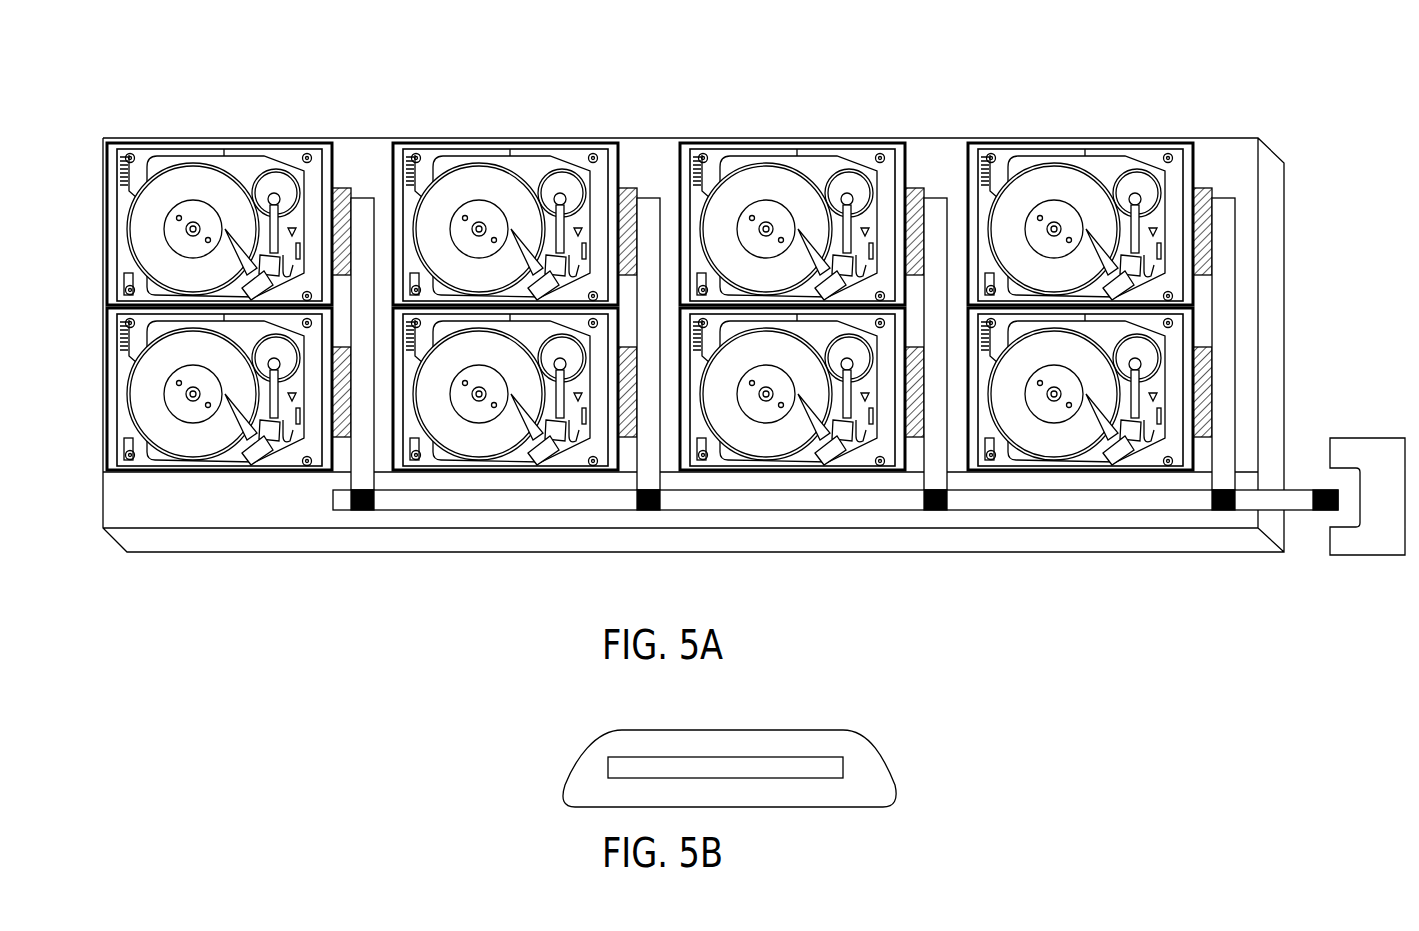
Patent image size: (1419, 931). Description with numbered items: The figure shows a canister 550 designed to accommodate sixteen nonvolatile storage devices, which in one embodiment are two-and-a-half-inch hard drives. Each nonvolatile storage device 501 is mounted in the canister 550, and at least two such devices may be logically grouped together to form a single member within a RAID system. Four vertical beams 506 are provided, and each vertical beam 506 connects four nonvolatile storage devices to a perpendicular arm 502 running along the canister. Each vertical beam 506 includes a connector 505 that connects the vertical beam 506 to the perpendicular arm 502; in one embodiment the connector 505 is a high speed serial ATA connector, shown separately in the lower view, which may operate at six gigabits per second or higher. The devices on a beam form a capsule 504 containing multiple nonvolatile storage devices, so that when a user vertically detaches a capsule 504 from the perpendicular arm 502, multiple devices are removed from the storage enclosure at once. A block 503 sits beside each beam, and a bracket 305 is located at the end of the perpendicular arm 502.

In FIG. 5A, the nonvolatile storage device 501 is at (148, 475).
In FIG. 5A, the perpendicular arm 502 is at (476, 510).
In FIG. 5A, the connector block 503 is at (343, 440).
In FIG. 5A, the capsule 504 is at (368, 120).
In FIG. 5A, the connector 505 is at (378, 510).
In FIG. 5B, the connector 505 is at (818, 730).
In FIG. 5A, the vertical beam 506 is at (362, 213).
In FIG. 5A, the mounting bracket 305 is at (1380, 452).
In FIG. 5A, the canister 550 is at (1178, 630).